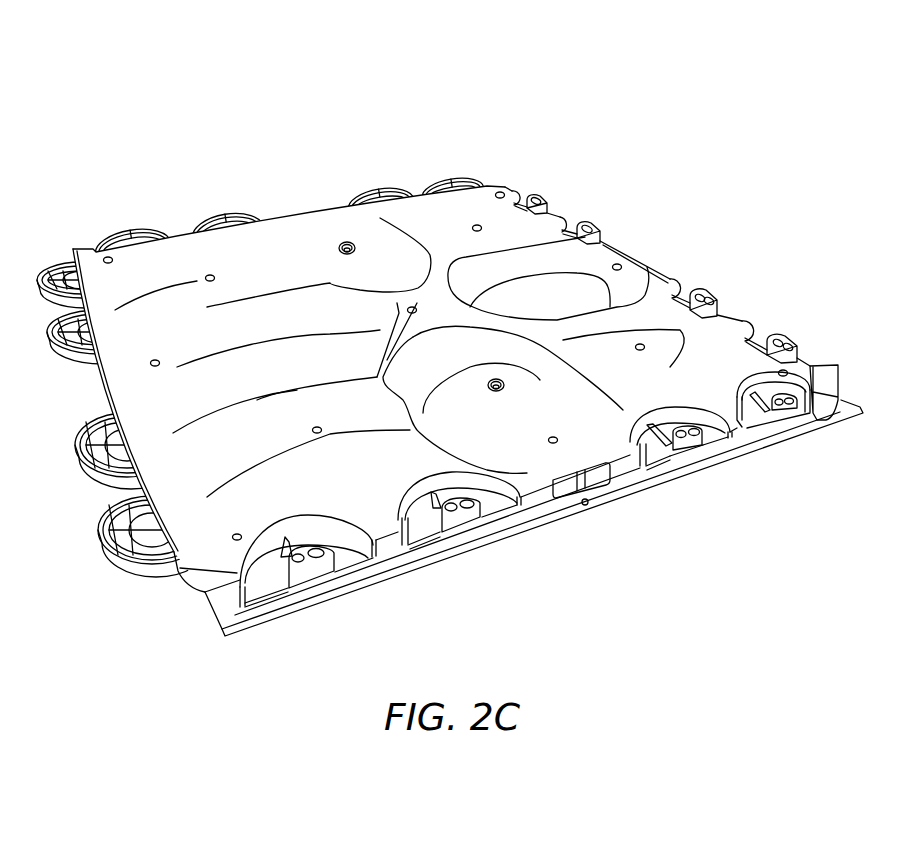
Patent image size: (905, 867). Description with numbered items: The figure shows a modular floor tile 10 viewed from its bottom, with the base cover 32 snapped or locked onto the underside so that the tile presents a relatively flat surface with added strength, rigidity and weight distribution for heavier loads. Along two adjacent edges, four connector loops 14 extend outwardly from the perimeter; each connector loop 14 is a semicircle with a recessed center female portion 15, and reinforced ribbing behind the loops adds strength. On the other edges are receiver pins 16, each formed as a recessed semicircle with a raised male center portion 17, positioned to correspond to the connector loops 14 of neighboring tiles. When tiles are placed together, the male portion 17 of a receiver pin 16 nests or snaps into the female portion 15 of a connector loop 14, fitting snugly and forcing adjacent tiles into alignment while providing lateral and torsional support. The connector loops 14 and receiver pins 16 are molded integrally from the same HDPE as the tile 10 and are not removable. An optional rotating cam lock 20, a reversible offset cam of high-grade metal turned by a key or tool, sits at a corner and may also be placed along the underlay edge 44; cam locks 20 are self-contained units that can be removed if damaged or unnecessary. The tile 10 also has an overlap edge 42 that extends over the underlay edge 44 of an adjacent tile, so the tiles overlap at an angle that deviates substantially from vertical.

The modular floor tile 10 is at (308, 130).
The connector loop 14 is at (66, 465).
The recessed center female portion 15 is at (142, 428).
The receiver pin 16 is at (692, 415).
The raised male center portion 17 is at (280, 555).
The cam lock 20 is at (594, 484).
The base cover 32 is at (329, 373).
The overlap edge 42 is at (120, 386).
The underlay edge 44 is at (410, 562).